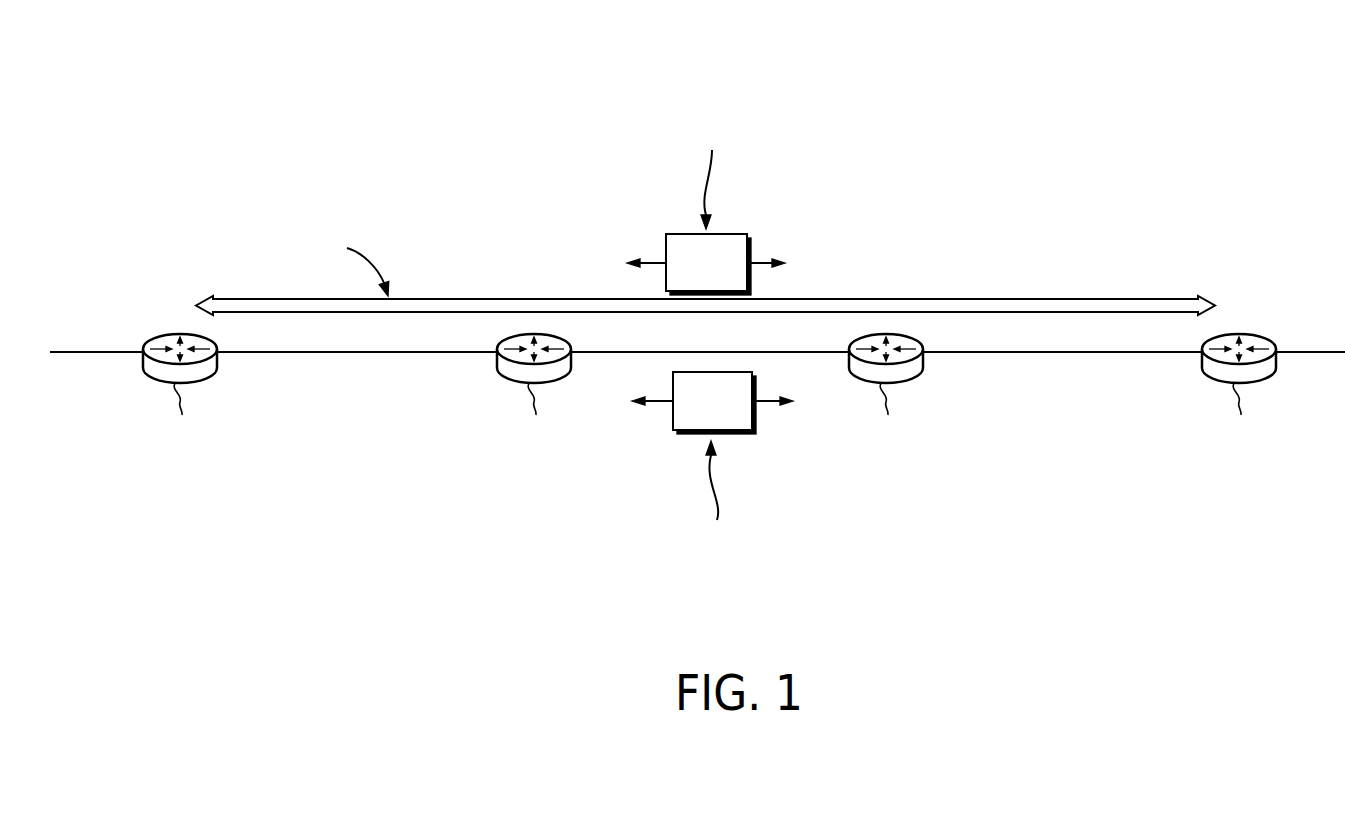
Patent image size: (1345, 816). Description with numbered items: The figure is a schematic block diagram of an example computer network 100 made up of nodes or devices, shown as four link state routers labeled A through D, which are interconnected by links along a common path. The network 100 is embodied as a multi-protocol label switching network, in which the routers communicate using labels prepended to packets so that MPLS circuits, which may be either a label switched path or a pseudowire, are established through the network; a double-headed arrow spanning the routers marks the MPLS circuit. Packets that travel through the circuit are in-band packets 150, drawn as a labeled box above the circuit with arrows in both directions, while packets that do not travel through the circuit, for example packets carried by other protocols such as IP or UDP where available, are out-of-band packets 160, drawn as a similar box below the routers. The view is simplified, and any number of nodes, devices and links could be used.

The computer network 100 is at (258, 73).
The in-band packets 150 is at (728, 276).
The out-of-band packets 160 is at (692, 414).